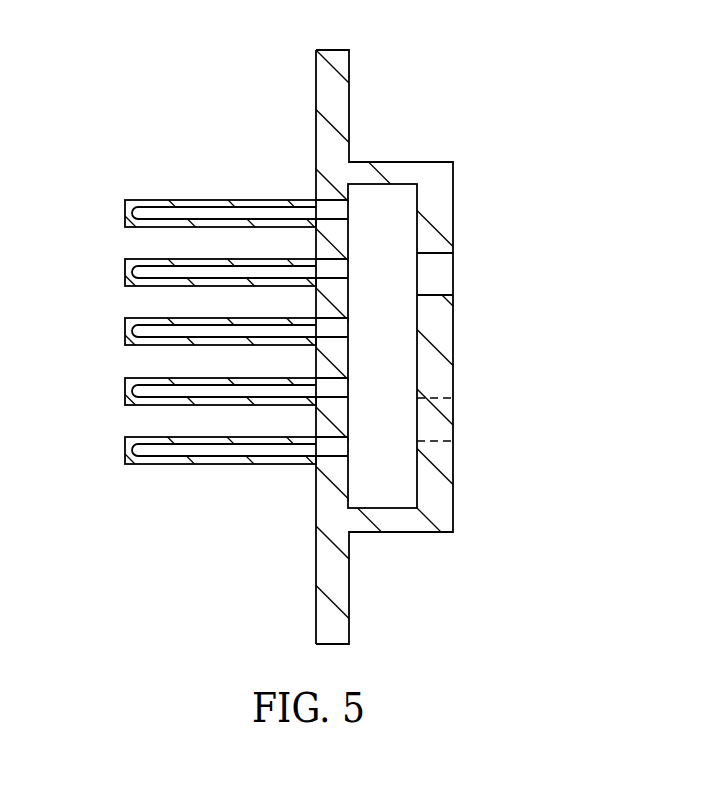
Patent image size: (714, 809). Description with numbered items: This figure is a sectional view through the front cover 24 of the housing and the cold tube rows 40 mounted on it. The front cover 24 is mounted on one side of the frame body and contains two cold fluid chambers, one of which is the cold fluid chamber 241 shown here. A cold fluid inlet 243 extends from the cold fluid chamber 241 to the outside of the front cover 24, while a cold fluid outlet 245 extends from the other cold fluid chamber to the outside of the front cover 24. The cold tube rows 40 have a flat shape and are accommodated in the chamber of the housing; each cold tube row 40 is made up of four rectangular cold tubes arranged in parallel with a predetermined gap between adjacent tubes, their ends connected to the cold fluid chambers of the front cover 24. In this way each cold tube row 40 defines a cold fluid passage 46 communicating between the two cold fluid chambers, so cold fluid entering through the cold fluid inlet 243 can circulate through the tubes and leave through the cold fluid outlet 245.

The front cover 24 is at (462, 140).
The cold fluid chamber 241 is at (391, 203).
The cold fluid inlet 243 is at (435, 253).
The cold fluid outlet 245 is at (430, 441).
The cold tube row 40 is at (121, 193).
The cold fluid passage 46 is at (213, 210).